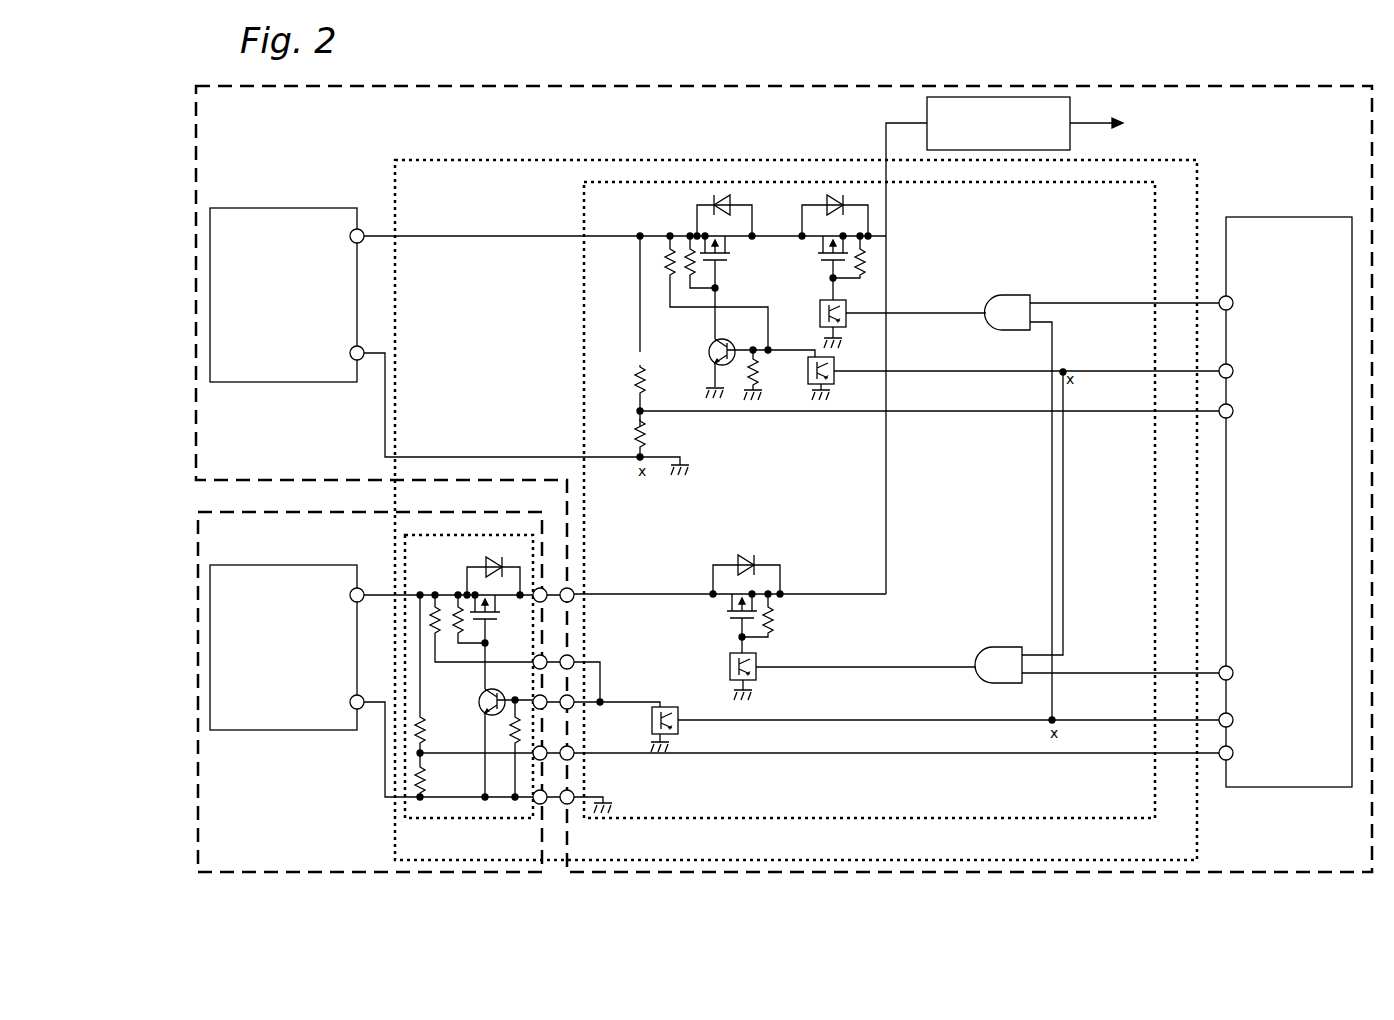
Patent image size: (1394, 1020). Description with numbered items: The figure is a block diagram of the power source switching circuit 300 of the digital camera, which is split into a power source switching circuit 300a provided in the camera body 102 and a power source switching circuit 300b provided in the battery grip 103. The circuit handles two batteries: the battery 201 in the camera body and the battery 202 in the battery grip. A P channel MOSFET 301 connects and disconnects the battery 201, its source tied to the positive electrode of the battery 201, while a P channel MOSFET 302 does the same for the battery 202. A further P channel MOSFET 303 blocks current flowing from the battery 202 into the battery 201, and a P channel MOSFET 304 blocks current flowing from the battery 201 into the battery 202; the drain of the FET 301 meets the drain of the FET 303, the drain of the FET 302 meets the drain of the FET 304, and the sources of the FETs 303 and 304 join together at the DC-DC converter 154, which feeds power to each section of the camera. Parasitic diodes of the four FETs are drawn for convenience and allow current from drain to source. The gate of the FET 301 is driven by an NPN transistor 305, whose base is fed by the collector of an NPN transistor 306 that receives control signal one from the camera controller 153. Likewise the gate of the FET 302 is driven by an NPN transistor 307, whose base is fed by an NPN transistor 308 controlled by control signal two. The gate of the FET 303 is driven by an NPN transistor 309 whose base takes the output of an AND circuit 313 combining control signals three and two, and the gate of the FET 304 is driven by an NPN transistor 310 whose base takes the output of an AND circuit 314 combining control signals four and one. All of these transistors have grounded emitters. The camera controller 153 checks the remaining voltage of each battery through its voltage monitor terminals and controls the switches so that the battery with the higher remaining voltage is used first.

The camera body 102 is at (491, 490).
The battery grip 103 is at (226, 501).
The camera controller 153 is at (1302, 787).
The DC-DC converter 154 is at (1092, 345).
The battery 201 is at (287, 273).
The battery 202 is at (287, 665).
The power source switching circuit 300 is at (1200, 833).
The power source switching circuit 300a is at (745, 820).
The power source switching circuit 300b is at (488, 820).
The P channel MOSFET 301 is at (730, 241).
The P channel MOSFET 302 is at (497, 600).
The P channel MOSFET 303 is at (825, 247).
The P channel MOSFET 304 is at (734, 604).
The NPN transistor 305 is at (719, 343).
The NPN transistor 306 is at (1016, 378).
The NPN transistor 307 is at (478, 720).
The NPN transistor 308 is at (938, 729).
The NPN transistor 309 is at (884, 324).
The NPN transistor 310 is at (853, 671).
The AND circuit 313 is at (1105, 493).
The AND circuit 314 is at (1100, 527).